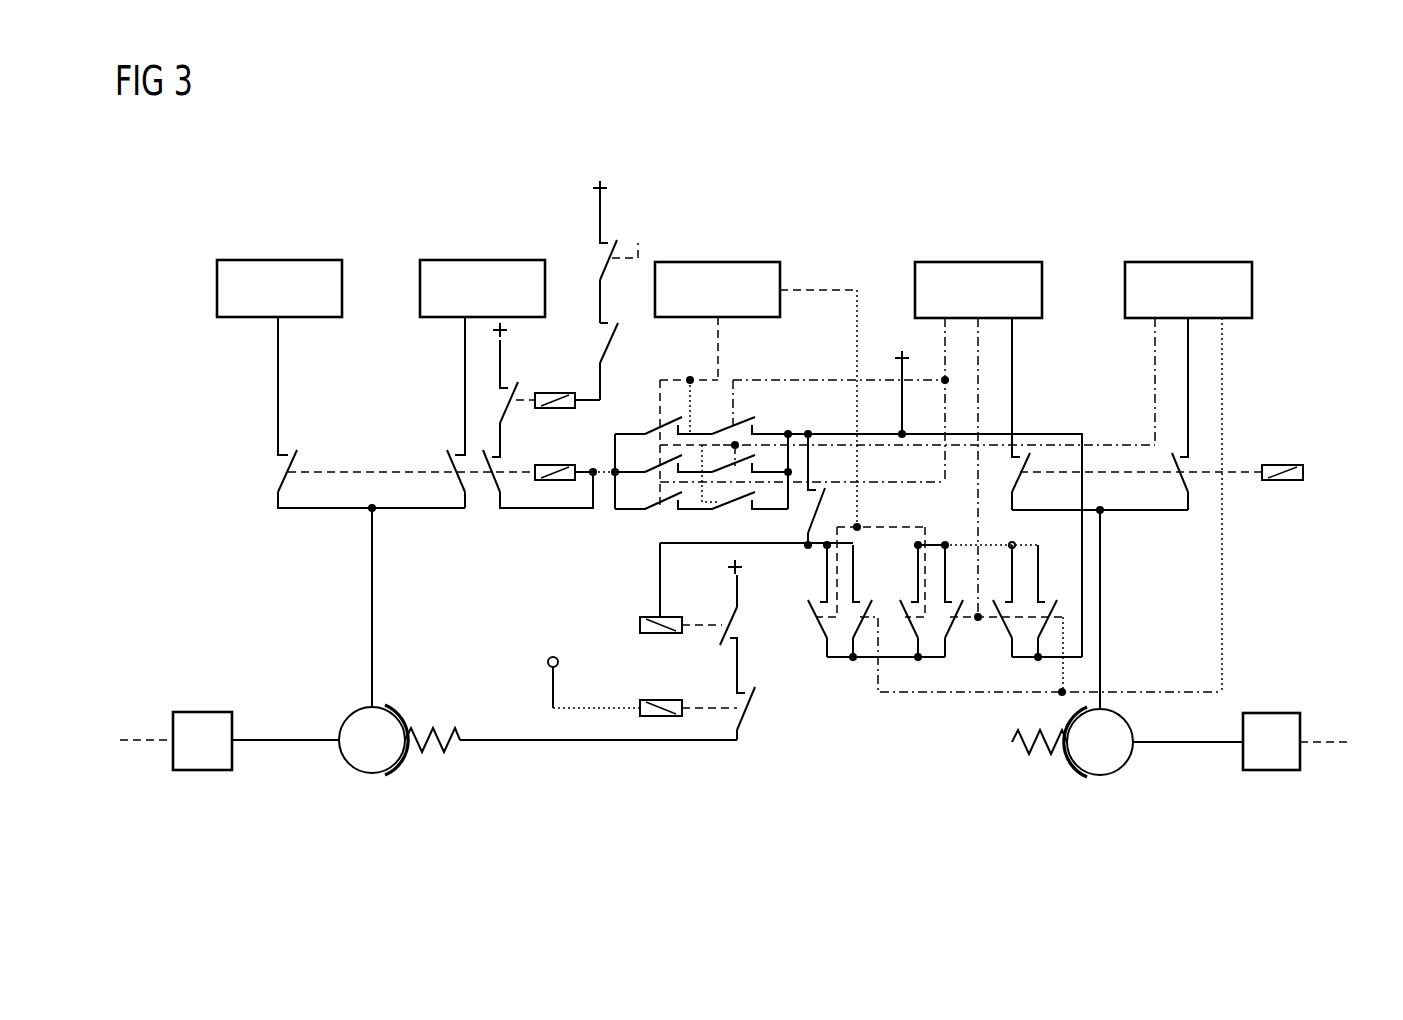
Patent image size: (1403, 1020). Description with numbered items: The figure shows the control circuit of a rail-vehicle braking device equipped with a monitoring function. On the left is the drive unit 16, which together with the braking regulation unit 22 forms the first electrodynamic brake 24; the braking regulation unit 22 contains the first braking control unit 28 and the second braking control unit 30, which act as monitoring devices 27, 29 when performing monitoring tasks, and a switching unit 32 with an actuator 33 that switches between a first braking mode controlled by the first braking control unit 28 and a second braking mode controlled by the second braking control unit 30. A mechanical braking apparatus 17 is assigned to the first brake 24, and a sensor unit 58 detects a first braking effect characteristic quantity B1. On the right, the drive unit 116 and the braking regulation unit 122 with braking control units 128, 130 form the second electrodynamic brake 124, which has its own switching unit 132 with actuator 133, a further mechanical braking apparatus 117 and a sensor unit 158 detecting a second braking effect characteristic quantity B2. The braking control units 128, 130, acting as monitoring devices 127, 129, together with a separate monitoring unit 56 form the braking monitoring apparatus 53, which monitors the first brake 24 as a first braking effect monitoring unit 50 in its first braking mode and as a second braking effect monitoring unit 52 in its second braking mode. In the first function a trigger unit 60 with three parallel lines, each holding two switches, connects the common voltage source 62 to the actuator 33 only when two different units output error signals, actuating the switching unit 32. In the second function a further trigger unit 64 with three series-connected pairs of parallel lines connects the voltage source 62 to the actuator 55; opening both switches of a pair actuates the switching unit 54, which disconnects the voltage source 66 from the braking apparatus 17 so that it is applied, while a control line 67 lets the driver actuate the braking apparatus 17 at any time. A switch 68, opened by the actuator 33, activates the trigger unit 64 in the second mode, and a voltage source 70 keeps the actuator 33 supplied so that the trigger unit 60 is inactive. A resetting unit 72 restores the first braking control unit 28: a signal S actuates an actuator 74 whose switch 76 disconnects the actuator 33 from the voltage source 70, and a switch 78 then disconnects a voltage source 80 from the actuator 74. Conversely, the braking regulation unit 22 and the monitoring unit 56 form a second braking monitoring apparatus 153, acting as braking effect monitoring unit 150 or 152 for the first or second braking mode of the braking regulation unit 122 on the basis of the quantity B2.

The braking regulation unit 22 is at (196, 286).
The braking effect monitoring unit 150 is at (224, 238).
The braking effect monitoring unit 152 is at (326, 182).
The monitoring device 27 is at (260, 258).
The first braking control unit 28 is at (297, 270).
The second braking monitoring apparatus 153 is at (406, 160).
The monitoring device 29 is at (465, 258).
The second braking control unit 30 is at (502, 270).
The switching unit 32 is at (256, 466).
The voltage source 70 is at (508, 330).
The switch 76 is at (497, 408).
The actuator 74 is at (546, 408).
The actuator 33 is at (562, 480).
The resetting unit 72 is at (658, 182).
The voltage source 80 is at (600, 182).
The signal S is at (640, 240).
The switch 78 is at (616, 350).
The monitoring unit 56 is at (720, 262).
The trigger unit 60 is at (770, 410).
The voltage source 62 is at (903, 346).
The switch 68 is at (818, 510).
The trigger unit 64 is at (973, 656).
The braking monitoring apparatus 53 is at (1160, 142).
The first braking effect monitoring unit 50 is at (1030, 182).
The monitoring device 127 is at (958, 258).
The first braking control unit 128 is at (1010, 270).
The second braking effect monitoring unit 52 is at (1250, 182).
The monitoring device 129 is at (1150, 258).
The second braking control unit 130 is at (1215, 270).
The braking regulation unit 122 is at (1320, 292).
The switching unit 132 is at (1322, 460).
The actuator 133 is at (1275, 465).
The second electrodynamic brake 124 is at (1322, 510).
The voltage source 66 is at (743, 568).
The actuator 55 is at (640, 623).
The control line 67 is at (595, 705).
The switching unit 54 is at (760, 640).
The first electrodynamic brake 24 is at (212, 644).
The first braking effect characteristic quantity B1 is at (152, 742).
The sensor unit 58 is at (199, 770).
The drive unit 16 is at (370, 778).
The mechanical braking apparatus 17 is at (448, 755).
The further mechanical braking apparatus 117 is at (1027, 754).
The drive unit 116 is at (1100, 778).
The sensor unit 158 is at (1268, 770).
The second braking effect characteristic quantity B2 is at (1311, 742).